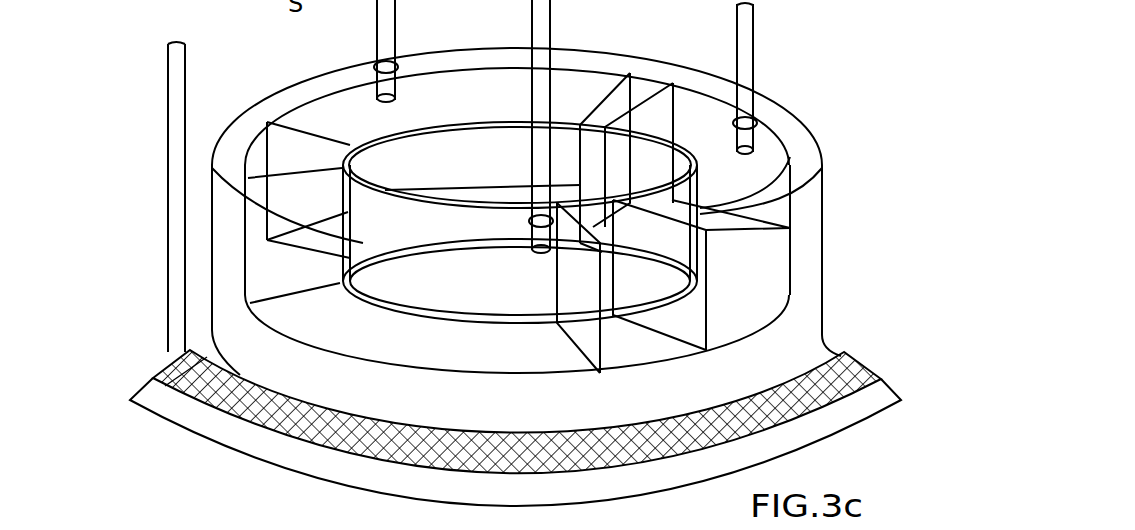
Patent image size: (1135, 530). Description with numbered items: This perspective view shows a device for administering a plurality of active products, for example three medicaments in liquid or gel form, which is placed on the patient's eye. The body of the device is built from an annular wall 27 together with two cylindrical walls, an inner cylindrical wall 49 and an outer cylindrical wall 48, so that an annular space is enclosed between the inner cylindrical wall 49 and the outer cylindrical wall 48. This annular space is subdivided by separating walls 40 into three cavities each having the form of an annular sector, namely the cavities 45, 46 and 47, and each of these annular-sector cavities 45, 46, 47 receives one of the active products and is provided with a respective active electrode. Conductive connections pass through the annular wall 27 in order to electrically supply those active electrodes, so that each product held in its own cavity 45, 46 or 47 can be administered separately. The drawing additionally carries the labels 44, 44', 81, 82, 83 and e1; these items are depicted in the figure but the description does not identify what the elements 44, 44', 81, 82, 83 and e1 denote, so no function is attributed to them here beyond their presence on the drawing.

The annular wall 27 is at (662, 72).
The separating walls 40 is at (327, 117).
The mesh screen 44 is at (515, 431).
The support rod 44' is at (141, 197).
The cavity in the form of an annular sector 45 is at (452, 230).
The cavity in the form of an annular sector 46 is at (474, 92).
The cavity in the form of an annular sector 47 is at (740, 230).
The outer cylindrical wall 48 is at (212, 205).
The inner cylindrical wall 49 is at (700, 170).
The central rod 81 is at (551, 24).
The left rod 82 is at (396, 12).
The right rod 83 is at (755, 37).
The electrode e1 is at (204, 44).